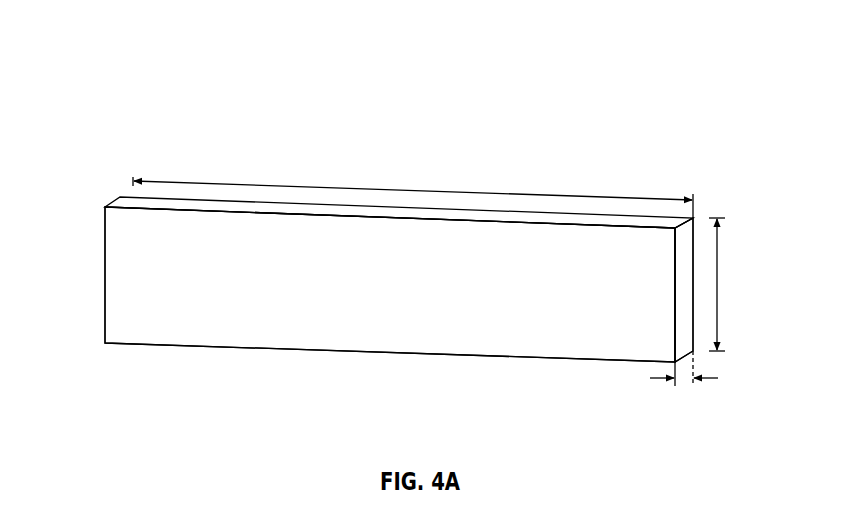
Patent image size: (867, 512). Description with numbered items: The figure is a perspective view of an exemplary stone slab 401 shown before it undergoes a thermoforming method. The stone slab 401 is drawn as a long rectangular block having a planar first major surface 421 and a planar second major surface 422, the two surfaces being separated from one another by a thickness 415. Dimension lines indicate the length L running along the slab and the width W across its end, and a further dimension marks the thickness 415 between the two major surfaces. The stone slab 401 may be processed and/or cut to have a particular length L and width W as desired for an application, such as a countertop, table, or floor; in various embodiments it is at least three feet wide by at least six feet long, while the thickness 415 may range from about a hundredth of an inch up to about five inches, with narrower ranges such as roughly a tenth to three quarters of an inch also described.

The stone slab 401 is at (124, 160).
The first major surface 421 is at (566, 341).
The second major surface 422 is at (695, 240).
The thickness 415 is at (708, 379).
The length L is at (412, 190).
The width W is at (718, 278).